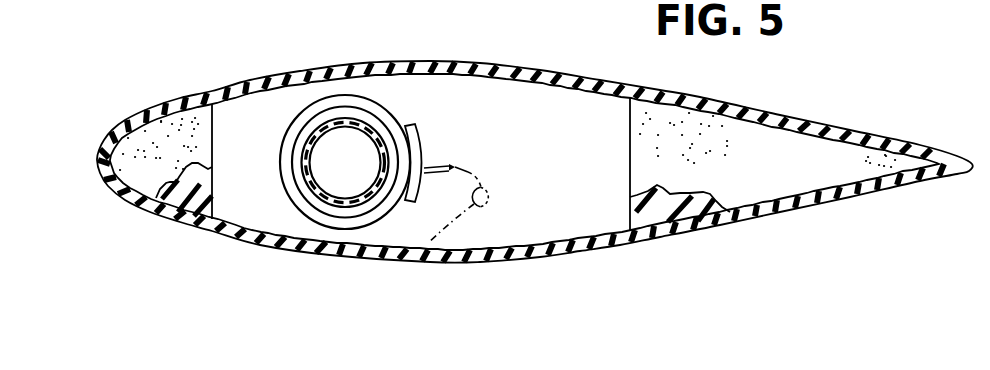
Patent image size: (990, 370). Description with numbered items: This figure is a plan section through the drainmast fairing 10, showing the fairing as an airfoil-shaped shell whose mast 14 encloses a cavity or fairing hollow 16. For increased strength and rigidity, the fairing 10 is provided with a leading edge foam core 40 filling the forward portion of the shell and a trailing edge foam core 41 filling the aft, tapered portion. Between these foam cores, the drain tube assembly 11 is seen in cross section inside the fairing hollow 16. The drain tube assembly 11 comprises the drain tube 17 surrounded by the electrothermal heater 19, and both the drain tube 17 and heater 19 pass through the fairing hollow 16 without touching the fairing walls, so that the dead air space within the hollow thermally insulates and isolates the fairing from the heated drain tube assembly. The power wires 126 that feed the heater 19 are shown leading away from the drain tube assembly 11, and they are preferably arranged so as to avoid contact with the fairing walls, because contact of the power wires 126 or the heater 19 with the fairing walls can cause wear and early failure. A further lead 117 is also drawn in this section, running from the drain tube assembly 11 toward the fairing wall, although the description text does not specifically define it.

The fairing 10 is at (582, 257).
The mast 14 is at (502, 64).
The fairing hollow 16 is at (497, 235).
The leading edge foam core 40 is at (145, 178).
The trailing edge foam core 41 is at (823, 159).
The electrothermal heater 19 is at (297, 120).
The drain tube 17 is at (357, 115).
The drain tube assembly 11 is at (302, 213).
The power wires 126 is at (467, 172).
The lead wire 117 is at (428, 243).